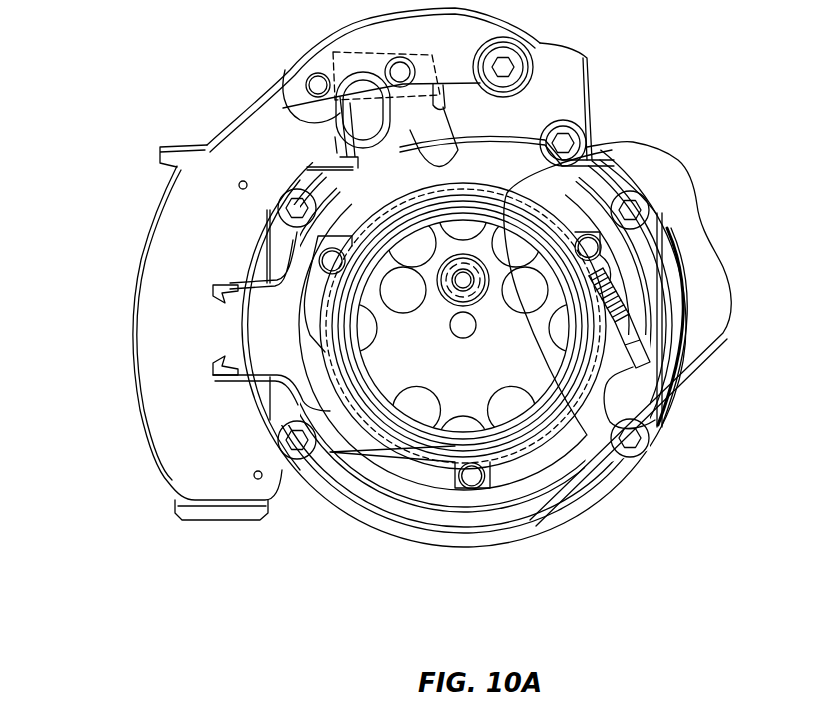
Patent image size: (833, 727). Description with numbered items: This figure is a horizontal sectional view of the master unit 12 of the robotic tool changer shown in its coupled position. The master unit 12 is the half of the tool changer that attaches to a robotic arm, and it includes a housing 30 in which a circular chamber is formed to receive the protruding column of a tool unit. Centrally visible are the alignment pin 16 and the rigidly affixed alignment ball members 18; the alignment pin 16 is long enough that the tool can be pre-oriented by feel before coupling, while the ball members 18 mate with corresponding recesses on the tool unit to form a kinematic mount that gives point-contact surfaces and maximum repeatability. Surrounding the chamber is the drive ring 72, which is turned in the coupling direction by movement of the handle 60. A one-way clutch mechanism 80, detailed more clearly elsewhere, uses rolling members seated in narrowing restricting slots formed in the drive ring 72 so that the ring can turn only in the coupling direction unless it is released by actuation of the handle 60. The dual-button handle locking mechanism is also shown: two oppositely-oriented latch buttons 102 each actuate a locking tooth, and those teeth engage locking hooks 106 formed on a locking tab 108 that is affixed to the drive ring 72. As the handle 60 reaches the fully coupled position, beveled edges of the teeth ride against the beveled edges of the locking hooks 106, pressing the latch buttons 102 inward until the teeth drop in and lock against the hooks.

The master unit 12 is at (428, 314).
The alignment pin 16 is at (450, 292).
The alignment ball members 18 is at (475, 403).
The housing 30 is at (506, 549).
The handle 60 is at (212, 245).
The drive ring 72 is at (491, 187).
The one-way clutch mechanism 80 is at (703, 128).
The latch buttons 102 is at (192, 143).
The locking hooks 106 is at (212, 362).
The locking tab 108 is at (280, 323).